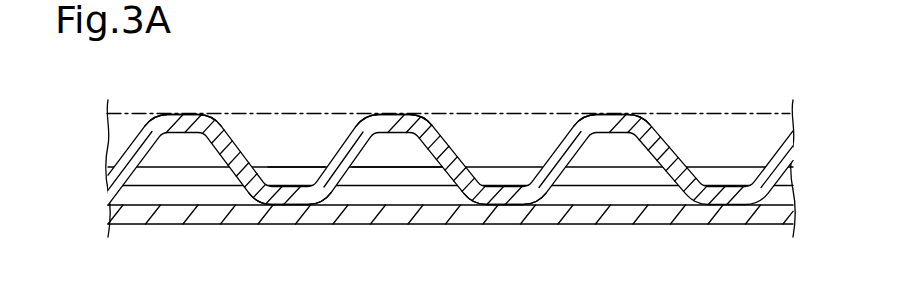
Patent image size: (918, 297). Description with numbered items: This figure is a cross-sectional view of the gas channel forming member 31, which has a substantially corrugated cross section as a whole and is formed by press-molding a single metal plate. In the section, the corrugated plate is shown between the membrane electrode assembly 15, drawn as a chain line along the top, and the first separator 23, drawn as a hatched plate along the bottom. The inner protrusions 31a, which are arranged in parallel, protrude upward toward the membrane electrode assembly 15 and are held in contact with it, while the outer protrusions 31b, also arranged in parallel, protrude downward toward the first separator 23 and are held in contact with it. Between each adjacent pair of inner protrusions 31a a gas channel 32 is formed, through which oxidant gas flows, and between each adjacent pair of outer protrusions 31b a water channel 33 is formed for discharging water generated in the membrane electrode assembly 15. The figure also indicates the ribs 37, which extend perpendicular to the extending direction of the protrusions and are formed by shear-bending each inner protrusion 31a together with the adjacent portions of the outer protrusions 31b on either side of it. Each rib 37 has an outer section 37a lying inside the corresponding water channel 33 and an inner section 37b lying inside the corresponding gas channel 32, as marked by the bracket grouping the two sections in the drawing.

The membrane electrode assembly 15 is at (107, 114).
The first separator 23 is at (128, 226).
The gas channel forming member 31 is at (723, 138).
The inner protrusions 31a is at (184, 113).
The outer protrusions 31b is at (296, 207).
The gas channels 32 is at (231, 167).
The water channels 33 is at (338, 190).
The ribs 37 is at (392, 83).
The outer section 37a is at (398, 165).
The inner section 37b is at (297, 167).